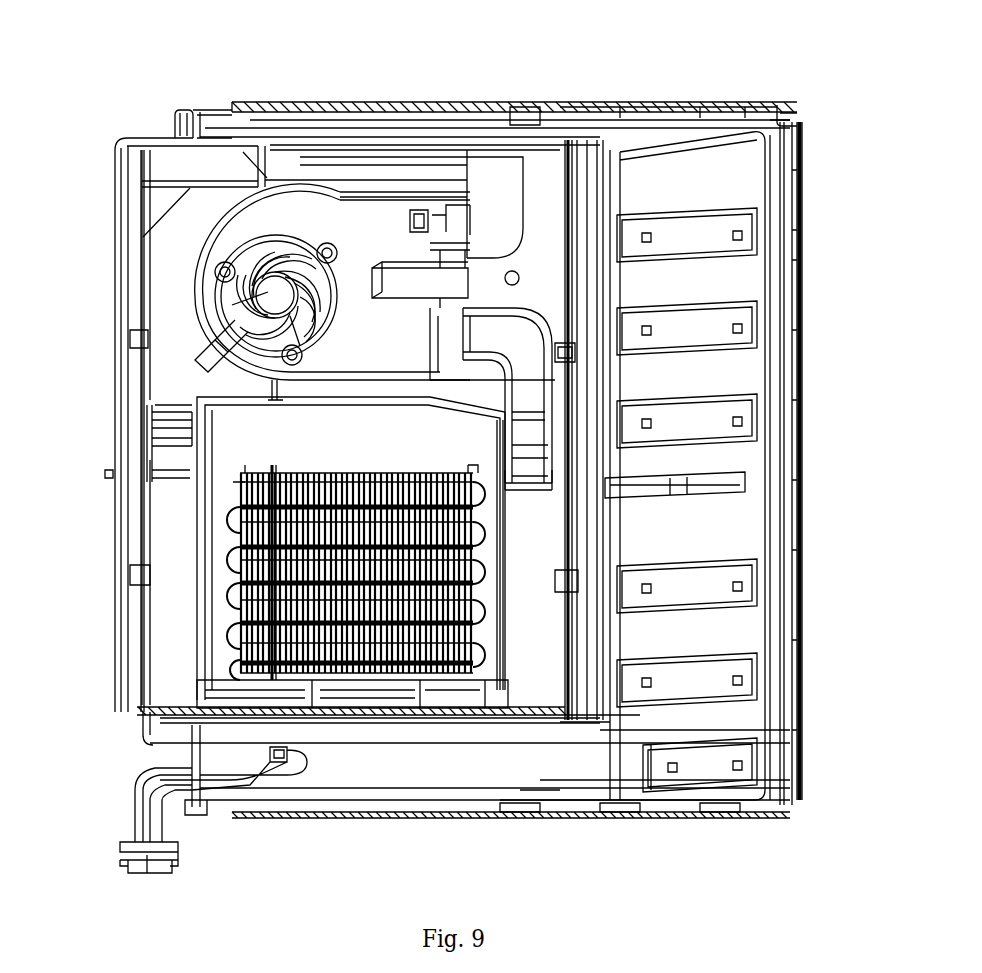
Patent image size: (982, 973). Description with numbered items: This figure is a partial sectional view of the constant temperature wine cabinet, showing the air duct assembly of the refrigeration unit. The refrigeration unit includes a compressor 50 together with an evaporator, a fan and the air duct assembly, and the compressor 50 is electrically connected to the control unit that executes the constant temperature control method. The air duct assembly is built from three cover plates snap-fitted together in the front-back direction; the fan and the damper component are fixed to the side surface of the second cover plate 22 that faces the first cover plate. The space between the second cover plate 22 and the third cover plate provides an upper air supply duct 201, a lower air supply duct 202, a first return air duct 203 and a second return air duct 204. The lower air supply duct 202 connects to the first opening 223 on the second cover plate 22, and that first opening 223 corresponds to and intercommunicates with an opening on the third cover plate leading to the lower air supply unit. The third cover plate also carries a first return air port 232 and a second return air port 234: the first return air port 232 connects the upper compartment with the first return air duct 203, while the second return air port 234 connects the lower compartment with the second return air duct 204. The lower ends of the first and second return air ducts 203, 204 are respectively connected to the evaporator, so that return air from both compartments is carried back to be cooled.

The second cover plate 22 is at (365, 202).
The upper air supply duct 201 is at (508, 183).
The compressor 50 is at (225, 297).
The first return air port 232 is at (167, 430).
The first return air duct 203 is at (162, 513).
The lower air supply duct 202 is at (537, 398).
The first opening 223 is at (547, 477).
The second return air duct 204 is at (547, 643).
The second return air port 234 is at (390, 700).